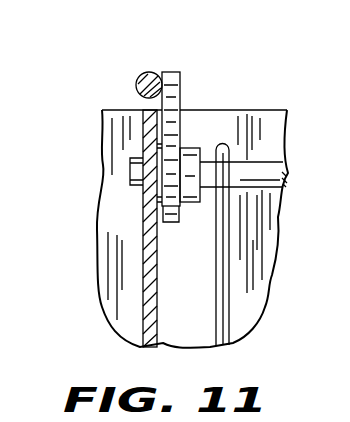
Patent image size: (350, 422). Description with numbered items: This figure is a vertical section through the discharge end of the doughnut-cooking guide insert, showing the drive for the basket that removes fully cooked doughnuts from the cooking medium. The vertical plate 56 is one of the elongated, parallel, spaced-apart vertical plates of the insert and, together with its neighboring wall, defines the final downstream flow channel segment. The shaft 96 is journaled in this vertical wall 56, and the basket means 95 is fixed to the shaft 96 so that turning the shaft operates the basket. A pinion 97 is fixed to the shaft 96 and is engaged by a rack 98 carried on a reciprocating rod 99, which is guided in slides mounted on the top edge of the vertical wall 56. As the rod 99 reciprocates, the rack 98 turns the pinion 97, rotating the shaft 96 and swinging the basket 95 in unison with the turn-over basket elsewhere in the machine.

The vertical plate 56 is at (143, 236).
The basket means 95 is at (230, 292).
The shaft 96 is at (250, 172).
The pinion 97 is at (170, 222).
The rack 98 is at (180, 90).
The reciprocating rod 99 is at (140, 74).